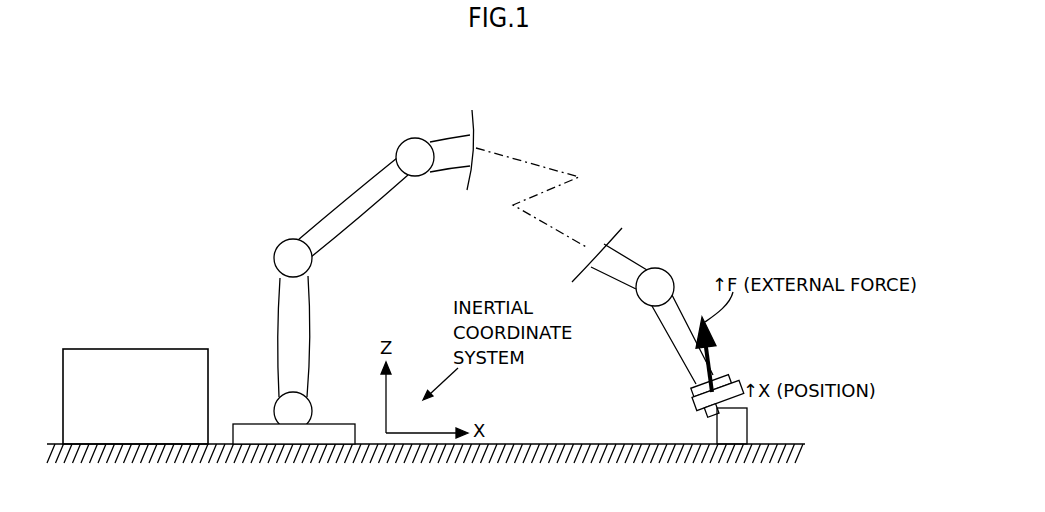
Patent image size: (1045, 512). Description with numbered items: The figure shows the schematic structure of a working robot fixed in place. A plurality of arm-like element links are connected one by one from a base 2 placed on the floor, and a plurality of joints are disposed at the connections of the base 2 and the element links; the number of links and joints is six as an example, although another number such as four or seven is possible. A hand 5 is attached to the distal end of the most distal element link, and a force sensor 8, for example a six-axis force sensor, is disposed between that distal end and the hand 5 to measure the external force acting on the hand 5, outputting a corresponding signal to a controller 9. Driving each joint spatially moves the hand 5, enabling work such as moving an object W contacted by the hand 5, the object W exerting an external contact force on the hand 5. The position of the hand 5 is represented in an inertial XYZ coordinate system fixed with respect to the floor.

The base 2 is at (273, 433).
The hand 5 is at (705, 408).
The force sensor 8 is at (727, 375).
The controller 9 is at (137, 349).
The object W is at (730, 433).